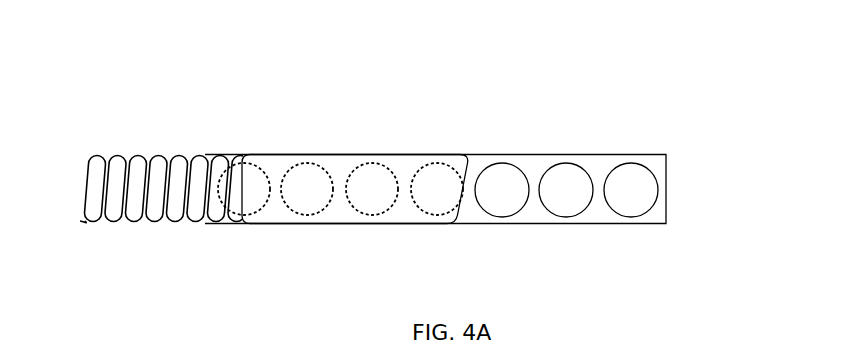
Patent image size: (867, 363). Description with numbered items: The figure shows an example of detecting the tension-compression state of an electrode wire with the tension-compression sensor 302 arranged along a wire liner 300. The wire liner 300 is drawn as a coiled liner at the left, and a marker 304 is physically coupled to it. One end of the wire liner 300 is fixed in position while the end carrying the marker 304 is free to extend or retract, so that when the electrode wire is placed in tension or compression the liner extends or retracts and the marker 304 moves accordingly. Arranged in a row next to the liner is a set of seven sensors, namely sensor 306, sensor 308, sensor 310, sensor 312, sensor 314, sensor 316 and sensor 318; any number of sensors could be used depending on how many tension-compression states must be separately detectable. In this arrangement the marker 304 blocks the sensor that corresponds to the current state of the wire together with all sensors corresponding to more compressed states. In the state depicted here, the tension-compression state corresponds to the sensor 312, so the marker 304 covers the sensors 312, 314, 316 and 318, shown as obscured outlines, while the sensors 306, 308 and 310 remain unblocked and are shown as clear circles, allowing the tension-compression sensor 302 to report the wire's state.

The wire liner 300 is at (123, 157).
The tension-compression sensor 302 is at (724, 78).
The marker 304 is at (405, 216).
The sensor 306 is at (640, 157).
The sensor 308 is at (575, 157).
The sensor 310 is at (512, 157).
The sensor 312 is at (449, 157).
The sensor 314 is at (385, 158).
The sensor 316 is at (322, 157).
The sensor 318 is at (247, 157).